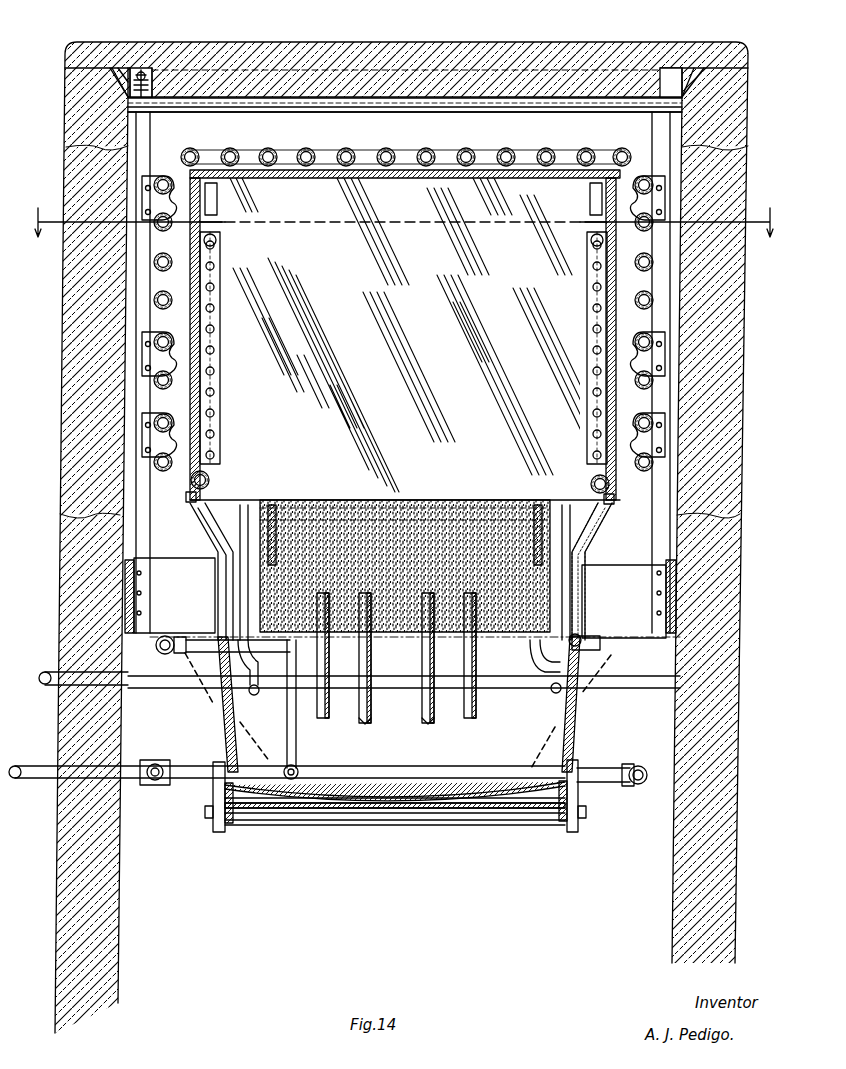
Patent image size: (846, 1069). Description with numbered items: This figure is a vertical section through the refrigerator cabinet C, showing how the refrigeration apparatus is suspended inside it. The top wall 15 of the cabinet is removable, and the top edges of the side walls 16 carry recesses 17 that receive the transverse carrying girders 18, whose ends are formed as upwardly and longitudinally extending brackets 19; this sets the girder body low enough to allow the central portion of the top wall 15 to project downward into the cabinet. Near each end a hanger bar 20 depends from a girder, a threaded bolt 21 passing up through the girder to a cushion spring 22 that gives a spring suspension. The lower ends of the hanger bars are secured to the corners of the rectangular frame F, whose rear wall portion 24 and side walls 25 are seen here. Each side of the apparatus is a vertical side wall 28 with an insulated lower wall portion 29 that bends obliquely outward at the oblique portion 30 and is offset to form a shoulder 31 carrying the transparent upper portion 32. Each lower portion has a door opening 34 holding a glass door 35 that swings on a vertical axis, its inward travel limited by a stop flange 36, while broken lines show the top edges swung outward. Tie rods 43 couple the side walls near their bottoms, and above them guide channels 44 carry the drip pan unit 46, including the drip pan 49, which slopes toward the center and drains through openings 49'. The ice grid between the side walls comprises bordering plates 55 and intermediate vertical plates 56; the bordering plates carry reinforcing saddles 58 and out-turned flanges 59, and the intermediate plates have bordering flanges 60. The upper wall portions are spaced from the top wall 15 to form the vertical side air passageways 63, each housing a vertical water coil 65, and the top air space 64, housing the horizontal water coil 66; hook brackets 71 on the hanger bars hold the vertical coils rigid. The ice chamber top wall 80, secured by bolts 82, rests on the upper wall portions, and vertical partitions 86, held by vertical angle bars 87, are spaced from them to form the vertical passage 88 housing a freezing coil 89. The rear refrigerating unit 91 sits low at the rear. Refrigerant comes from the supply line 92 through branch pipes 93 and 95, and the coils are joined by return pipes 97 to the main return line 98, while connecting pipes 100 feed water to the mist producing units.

The top wall 15 is at (586, 30).
The side walls 16 is at (715, 152).
The recesses 17 is at (110, 72).
The girders 18 is at (240, 113).
The brackets 19 is at (128, 88).
The hanger bar 20 is at (150, 143).
The threaded bolt 21 is at (144, 72).
The cushion spring 22 is at (131, 68).
The rear wall portion 24 is at (168, 562).
The side walls 25 is at (126, 580).
The side wall 28 is at (212, 828).
The lower wall portion 29 is at (582, 604).
The oblique portion 30 is at (200, 520).
The shoulder 31 is at (186, 497).
The upper portion 32 is at (192, 482).
The door opening 34 is at (586, 643).
The glass doors 35 is at (222, 752).
The stop flange 36 is at (240, 655).
The tie rods 43 is at (360, 820).
The guide channels 44 is at (228, 790).
The drip pan unit 46 is at (495, 802).
The drip pan 49 is at (395, 771).
The openings 49' is at (395, 845).
The bordering plates 55 is at (275, 640).
The intermediate vertical plates 56 is at (470, 665).
The reinforcing saddle 58 is at (272, 520).
The out-turned flanges 59 is at (254, 696).
The bordering side and bottom flanges 60 is at (428, 722).
The vertical side air passageways 63 is at (180, 230).
The top air space 64 is at (430, 118).
The vertical water coil 65 is at (158, 384).
The horizontal water coil 66 is at (506, 152).
The hook brackets 71 is at (650, 205).
The ice chamber top wall 80 is at (326, 170).
The bolts 82 is at (395, 245).
The vertical partitions 86 is at (222, 262).
The vertical angle bars 87 is at (218, 212).
The vertical passage 88 is at (203, 262).
The freezing coil 89 is at (215, 300).
The rear refrigerating unit 91 is at (380, 525).
The refrigerant supply line 92 is at (40, 778).
The branch pipe 93 is at (638, 786).
The branch pipe 95 is at (152, 765).
The return pipes 97 is at (235, 520).
The main return line 98 is at (45, 680).
The connecting pipes 100 is at (296, 722).
The cabinet C is at (298, 44).
The frame F is at (676, 577).